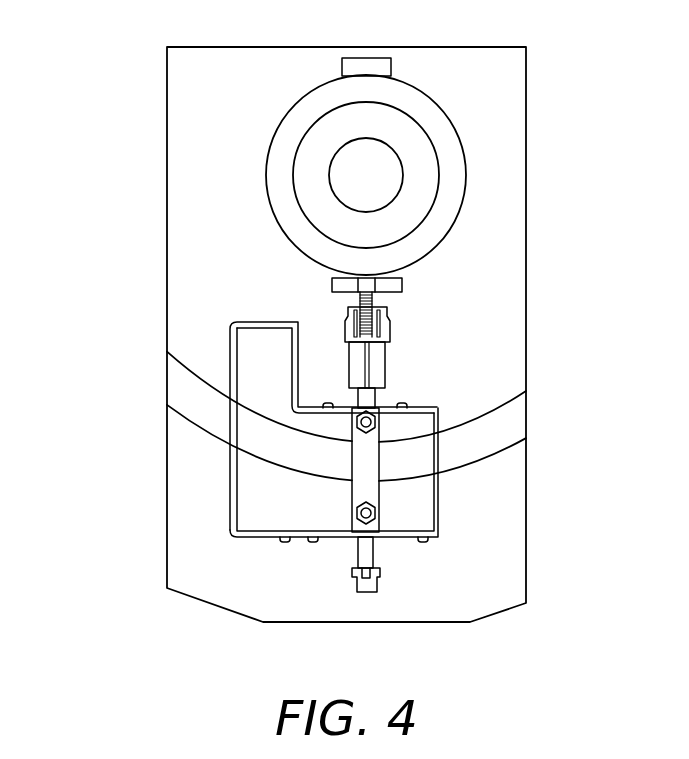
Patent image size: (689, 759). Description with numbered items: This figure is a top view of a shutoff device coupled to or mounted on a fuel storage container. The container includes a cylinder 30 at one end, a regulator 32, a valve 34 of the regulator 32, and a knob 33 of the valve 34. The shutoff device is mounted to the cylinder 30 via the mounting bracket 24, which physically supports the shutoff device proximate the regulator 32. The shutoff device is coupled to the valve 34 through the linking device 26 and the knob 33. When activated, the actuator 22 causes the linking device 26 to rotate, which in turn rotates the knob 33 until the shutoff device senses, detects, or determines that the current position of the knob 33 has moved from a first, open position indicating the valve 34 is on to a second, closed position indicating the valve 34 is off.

The actuator 22 is at (252, 523).
The mounting bracket 24 is at (372, 488).
The linking device 26 is at (368, 358).
The cylinder 30 is at (192, 405).
The regulator 32 is at (312, 127).
The knob 33 is at (392, 290).
The valve 34 is at (330, 319).